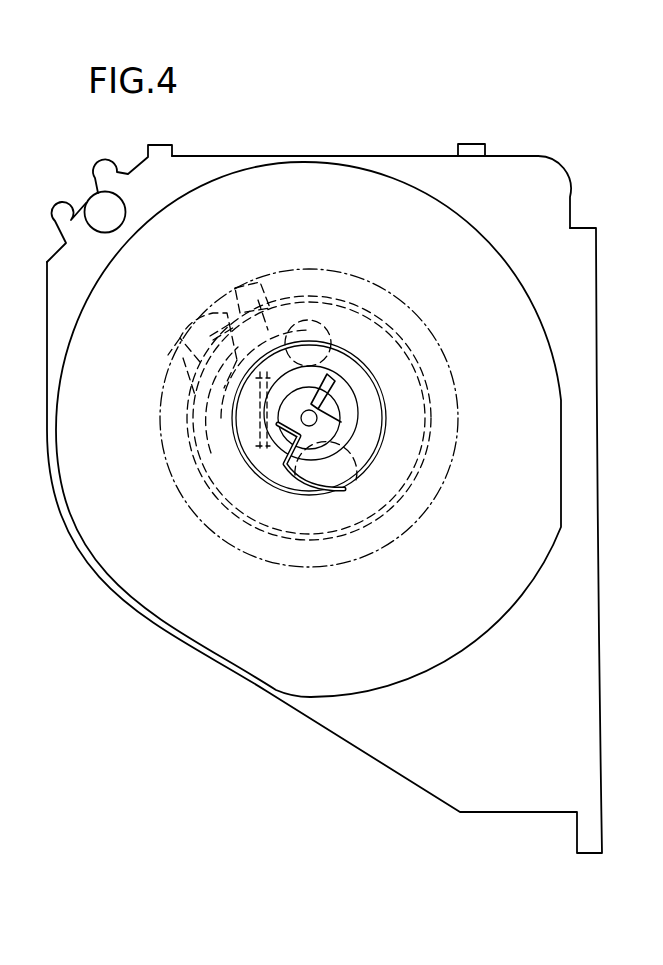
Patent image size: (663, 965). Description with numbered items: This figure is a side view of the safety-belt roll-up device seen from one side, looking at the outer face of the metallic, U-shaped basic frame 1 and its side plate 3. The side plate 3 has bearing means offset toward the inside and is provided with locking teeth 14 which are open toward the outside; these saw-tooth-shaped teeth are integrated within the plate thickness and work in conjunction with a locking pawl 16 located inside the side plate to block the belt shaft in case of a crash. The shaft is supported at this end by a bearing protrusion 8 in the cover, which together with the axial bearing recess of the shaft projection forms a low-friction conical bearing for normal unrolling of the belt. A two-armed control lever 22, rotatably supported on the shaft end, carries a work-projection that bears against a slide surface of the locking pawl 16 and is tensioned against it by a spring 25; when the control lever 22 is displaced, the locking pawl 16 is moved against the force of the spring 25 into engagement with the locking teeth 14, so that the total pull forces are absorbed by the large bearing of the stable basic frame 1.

The basic frame 1 is at (396, 774).
The side plate 3 is at (65, 276).
The bearing protrusion 8 is at (316, 425).
The locking teeth 14 is at (167, 383).
The locking pawl 16 is at (260, 282).
The control lever 22 is at (229, 512).
The spring 25 is at (200, 453).